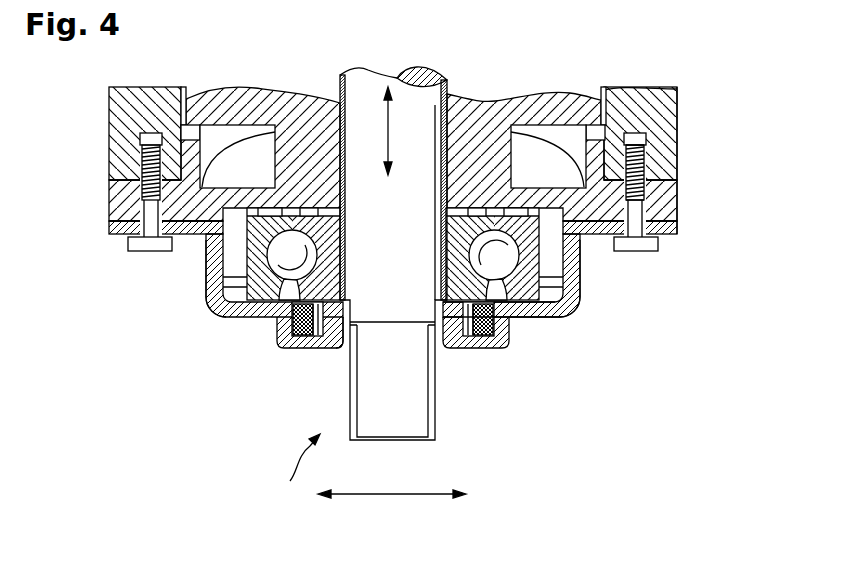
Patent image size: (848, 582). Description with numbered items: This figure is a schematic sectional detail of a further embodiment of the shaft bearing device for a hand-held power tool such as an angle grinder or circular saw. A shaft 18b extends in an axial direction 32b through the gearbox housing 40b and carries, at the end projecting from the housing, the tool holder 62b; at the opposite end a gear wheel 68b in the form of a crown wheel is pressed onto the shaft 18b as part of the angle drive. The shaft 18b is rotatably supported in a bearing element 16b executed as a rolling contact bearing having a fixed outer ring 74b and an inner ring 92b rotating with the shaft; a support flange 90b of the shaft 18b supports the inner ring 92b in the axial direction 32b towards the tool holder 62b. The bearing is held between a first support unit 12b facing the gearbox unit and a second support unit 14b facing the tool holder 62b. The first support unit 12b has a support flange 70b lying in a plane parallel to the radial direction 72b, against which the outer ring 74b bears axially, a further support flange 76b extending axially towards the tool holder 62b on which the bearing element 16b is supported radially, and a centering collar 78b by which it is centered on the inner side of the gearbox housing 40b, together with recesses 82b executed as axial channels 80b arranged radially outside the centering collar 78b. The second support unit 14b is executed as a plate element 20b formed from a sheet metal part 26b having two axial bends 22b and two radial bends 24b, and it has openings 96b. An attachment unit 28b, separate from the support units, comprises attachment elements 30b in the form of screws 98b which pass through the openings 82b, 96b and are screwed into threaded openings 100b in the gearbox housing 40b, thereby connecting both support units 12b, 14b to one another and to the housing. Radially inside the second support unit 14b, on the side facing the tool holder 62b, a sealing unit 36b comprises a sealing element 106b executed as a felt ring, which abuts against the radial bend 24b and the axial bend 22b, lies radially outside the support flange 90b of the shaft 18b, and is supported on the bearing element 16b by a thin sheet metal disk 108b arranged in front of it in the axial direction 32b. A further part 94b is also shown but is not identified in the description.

The first support unit 12b is at (665, 192).
The second support unit 14b is at (678, 226).
The bearing element 16b is at (290, 321).
The shaft 18b is at (416, 105).
The plate element 20b is at (581, 302).
The axial bends 22b is at (583, 249).
The radial bends 24b is at (561, 309).
The sheet metal part 26b is at (285, 306).
The attachment unit 28b is at (122, 172).
The attachment elements 30b is at (151, 132).
The axial direction 32b is at (384, 131).
The sealing unit 36b is at (318, 343).
The gearbox housing 40b is at (640, 112).
The tool holder 62b is at (285, 468).
The gear wheel 68b is at (486, 130).
The support flange 70b is at (560, 108).
The radial direction 72b is at (392, 496).
The fixed outer ring 74b is at (541, 312).
The further support flange 76b is at (208, 266).
The centering collar 78b is at (602, 126).
The axial channels 80b is at (130, 189).
The recesses 82b is at (660, 168).
The support flange 90b is at (340, 349).
The inner ring 92b is at (433, 257).
The flange 94b is at (128, 223).
The openings 96b is at (668, 231).
The screws 98b is at (643, 241).
The openings 100b is at (677, 117).
The sealing element 106b is at (477, 351).
The sheet metal disk 108b is at (300, 341).